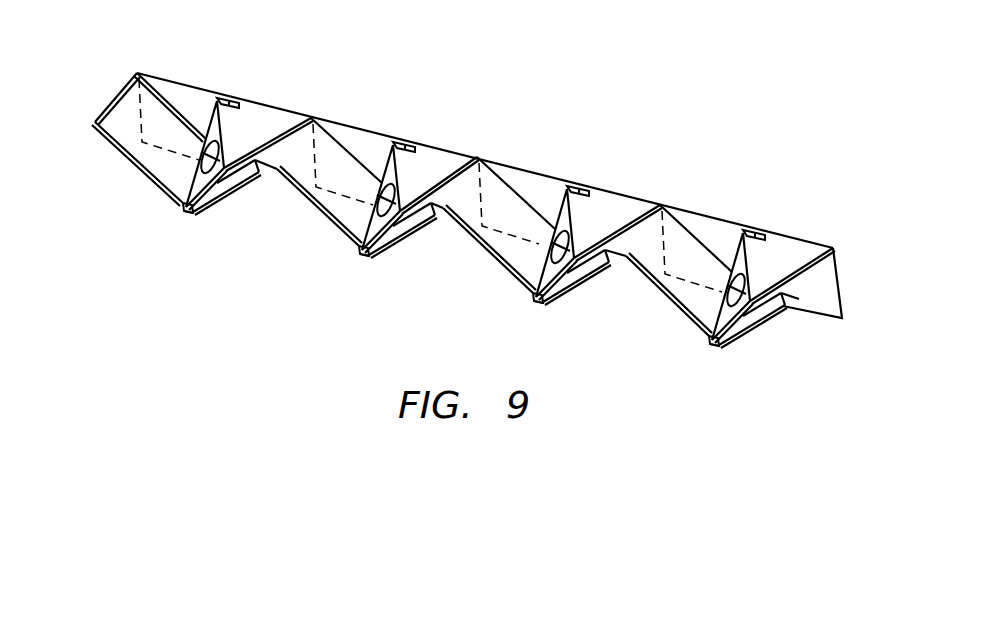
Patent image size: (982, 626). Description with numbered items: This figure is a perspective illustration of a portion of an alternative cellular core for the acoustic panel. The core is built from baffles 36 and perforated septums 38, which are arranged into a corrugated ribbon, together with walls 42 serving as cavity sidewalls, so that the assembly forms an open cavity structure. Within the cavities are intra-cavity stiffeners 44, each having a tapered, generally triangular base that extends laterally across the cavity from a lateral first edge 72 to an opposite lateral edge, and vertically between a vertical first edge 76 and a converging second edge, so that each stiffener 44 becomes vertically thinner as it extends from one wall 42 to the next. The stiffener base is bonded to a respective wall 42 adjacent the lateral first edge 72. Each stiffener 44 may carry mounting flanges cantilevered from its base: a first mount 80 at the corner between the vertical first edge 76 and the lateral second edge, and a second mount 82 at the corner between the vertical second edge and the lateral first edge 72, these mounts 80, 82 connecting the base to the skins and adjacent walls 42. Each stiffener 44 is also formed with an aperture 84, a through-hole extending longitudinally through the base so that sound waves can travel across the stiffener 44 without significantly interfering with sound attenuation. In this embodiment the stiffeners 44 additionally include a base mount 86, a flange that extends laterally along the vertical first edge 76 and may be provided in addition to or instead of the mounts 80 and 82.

The baffle 36 is at (249, 182).
The perforated septum 38 is at (122, 153).
The wall 42 is at (838, 266).
The stiffener 44 is at (204, 108).
The lateral first edge 72 is at (228, 130).
The vertical first edge 76 is at (182, 210).
The first mount 80 is at (187, 216).
The second mount 82 is at (233, 97).
The aperture 84 is at (415, 208).
The base mount 86 is at (214, 198).